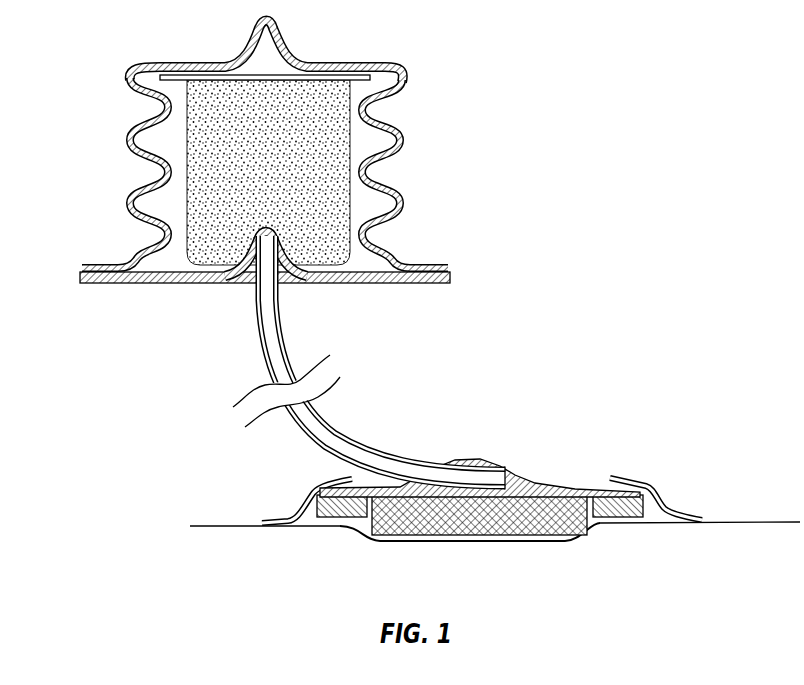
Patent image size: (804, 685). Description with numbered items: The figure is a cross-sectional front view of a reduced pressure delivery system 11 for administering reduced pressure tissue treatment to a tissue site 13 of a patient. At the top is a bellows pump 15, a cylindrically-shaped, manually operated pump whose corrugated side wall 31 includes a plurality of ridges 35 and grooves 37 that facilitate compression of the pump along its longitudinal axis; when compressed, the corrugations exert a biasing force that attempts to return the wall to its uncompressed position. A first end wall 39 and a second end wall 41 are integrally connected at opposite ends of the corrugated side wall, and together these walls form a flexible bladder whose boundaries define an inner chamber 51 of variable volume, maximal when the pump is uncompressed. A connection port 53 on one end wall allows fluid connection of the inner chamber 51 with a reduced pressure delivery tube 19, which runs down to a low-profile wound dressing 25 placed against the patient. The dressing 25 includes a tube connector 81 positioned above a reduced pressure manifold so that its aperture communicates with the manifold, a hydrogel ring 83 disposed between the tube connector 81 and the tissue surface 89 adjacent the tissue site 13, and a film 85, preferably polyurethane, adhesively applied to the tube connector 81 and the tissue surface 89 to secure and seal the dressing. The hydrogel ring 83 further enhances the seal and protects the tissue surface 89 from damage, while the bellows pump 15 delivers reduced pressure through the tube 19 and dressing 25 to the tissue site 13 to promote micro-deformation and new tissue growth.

The reduced pressure delivery system 11 is at (431, 299).
The bellows pump 15 is at (264, 169).
The first end wall 39 is at (317, 63).
The corrugated side wall 31 is at (395, 128).
The ridges 35 is at (130, 140).
The grooves 37 is at (152, 170).
The inner chamber 51 is at (364, 200).
The second end wall 41 is at (372, 279).
The connection port 53 is at (283, 272).
The reduced pressure delivery tube 19 is at (338, 434).
The low-profile wound dressing 25 is at (495, 488).
The tube connector 81 is at (480, 460).
The hydrogel ring 83 is at (617, 482).
The film 85 is at (320, 483).
The tissue surface 89 is at (313, 533).
The tissue site 13 is at (480, 547).